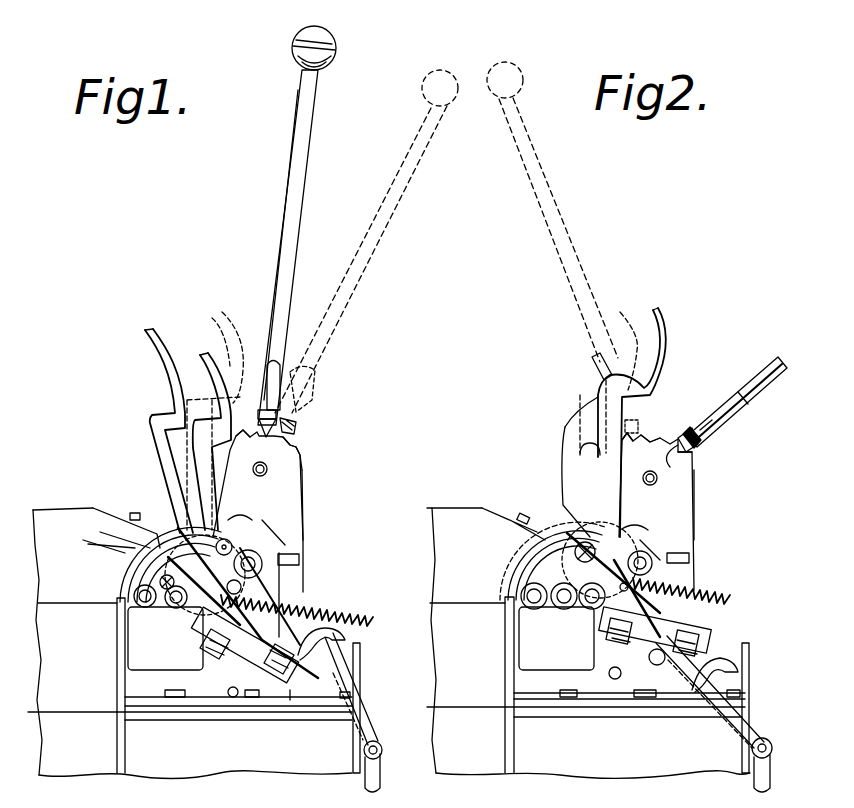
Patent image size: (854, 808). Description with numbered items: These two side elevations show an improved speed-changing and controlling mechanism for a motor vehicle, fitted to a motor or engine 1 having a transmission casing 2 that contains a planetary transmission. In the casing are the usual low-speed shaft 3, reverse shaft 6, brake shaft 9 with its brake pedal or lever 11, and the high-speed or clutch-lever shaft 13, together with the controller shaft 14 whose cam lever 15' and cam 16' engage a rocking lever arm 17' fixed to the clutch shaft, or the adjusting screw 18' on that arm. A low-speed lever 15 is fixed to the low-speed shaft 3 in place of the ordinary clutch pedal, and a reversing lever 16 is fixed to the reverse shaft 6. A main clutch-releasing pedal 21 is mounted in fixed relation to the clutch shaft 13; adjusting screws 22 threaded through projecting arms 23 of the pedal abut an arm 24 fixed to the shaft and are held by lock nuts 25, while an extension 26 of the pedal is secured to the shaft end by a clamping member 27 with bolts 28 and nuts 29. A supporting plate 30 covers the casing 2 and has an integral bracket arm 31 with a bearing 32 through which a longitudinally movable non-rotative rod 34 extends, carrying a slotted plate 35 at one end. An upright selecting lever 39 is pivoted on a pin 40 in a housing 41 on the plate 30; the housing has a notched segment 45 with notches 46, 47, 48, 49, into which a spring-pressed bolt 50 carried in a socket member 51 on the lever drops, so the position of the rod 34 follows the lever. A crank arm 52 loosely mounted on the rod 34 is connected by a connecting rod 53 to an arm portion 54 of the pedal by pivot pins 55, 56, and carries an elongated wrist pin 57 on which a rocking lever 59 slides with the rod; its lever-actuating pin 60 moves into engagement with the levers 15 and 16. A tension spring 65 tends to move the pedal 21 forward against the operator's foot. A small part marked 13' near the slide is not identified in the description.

In FIG. 1, the motor or engine 1 is at (66, 520).
In FIG. 2, the motor or engine 1 is at (455, 512).
In FIG. 1, the transmission casing 2 is at (108, 512).
In FIG. 2, the transmission casing 2 is at (512, 520).
In FIG. 1, the low-speed shaft 3 is at (173, 610).
In FIG. 2, the low-speed shaft 3 is at (563, 610).
In FIG. 1, the reverse shaft 6 is at (147, 610).
In FIG. 2, the reverse shaft 6 is at (534, 610).
In FIG. 1, the brake shaft 9 is at (197, 605).
In FIG. 2, the brake shaft 9 is at (590, 610).
In FIG. 1, the brake pedal or lever 11 is at (194, 452).
In FIG. 2, the brake pedal or lever 11 is at (572, 428).
In FIG. 1, the high-speed shaft or clutch-lever shaft 13 is at (243, 612).
In FIG. 2, the high-speed shaft or clutch-lever shaft 13 is at (639, 641).
In FIG. 1, the stop block 13' is at (306, 552).
In FIG. 1, the controller shaft 14 is at (383, 770).
In FIG. 2, the controller shaft 14 is at (752, 700).
In FIG. 1, the low-speed lever 15 is at (98, 542).
In FIG. 2, the low-speed lever 15 is at (630, 621).
In FIG. 1, the cam lever 15' is at (371, 674).
In FIG. 1, the reversing lever 16 is at (115, 532).
In FIG. 2, the reversing lever 16 is at (510, 589).
In FIG. 1, the cam 16' is at (345, 642).
In FIG. 2, the cam 16' is at (750, 633).
In FIG. 1, the rocking lever arm 17' is at (356, 597).
In FIG. 2, the rocking lever arm 17' is at (747, 596).
In FIG. 1, the adjusting screw 18' is at (349, 614).
In FIG. 2, the adjusting screw 18' is at (742, 614).
In FIG. 1, the main clutch-releasing pedal or lever 21 is at (130, 420).
In FIG. 2, the main clutch-releasing pedal or lever 21 is at (668, 330).
In FIG. 1, the adjusting screws 22 is at (216, 700).
In FIG. 2, the adjusting screws 22 is at (610, 640).
In FIG. 1, the projecting arm 23 is at (318, 590).
In FIG. 2, the projecting arm 23 is at (692, 580).
In FIG. 1, the arm 24 is at (270, 690).
In FIG. 2, the arm 24 is at (630, 690).
In FIG. 1, the lock nut 25 is at (230, 697).
In FIG. 2, the lock nut 25 is at (590, 625).
In FIG. 2, the extension or arm portion 26 is at (610, 675).
In FIG. 1, the clamping member 27 is at (345, 673).
In FIG. 2, the clamping member 27 is at (705, 678).
In FIG. 1, the clamping screws or headed bolts 28 is at (340, 651).
In FIG. 2, the clamping screws or headed bolts 28 is at (705, 668).
In FIG. 1, the threaded nuts 29 is at (306, 552).
In FIG. 1, the supporting plate or bracket member 30 is at (150, 520).
In FIG. 2, the supporting plate or bracket member 30 is at (520, 545).
In FIG. 1, the bracket arm or extension 31 is at (276, 518).
In FIG. 2, the bracket arm or extension 31 is at (700, 560).
In FIG. 2, the bearing 32 is at (670, 577).
In FIG. 1, the longitudinally movable non-rotative shaft or rod 34 is at (276, 500).
In FIG. 2, the longitudinally movable non-rotative shaft or rod 34 is at (690, 556).
In FIG. 1, the grooved or slotted plate 35 is at (300, 576).
In FIG. 2, the grooved or slotted plate 35 is at (694, 565).
In FIG. 1, the selecting lever 39 is at (370, 215).
In FIG. 2, the selecting lever 39 is at (770, 364).
In FIG. 1, the pivot pin or axle 40 is at (268, 470).
In FIG. 2, the pivot pin or axle 40 is at (658, 478).
In FIG. 1, the housing 41 is at (304, 476).
In FIG. 2, the housing 41 is at (696, 494).
In FIG. 1, the notched segment 45 is at (292, 448).
In FIG. 2, the notched segment 45 is at (692, 462).
In FIG. 1, the notch 46 is at (290, 423).
In FIG. 2, the notch 46 is at (660, 438).
In FIG. 1, the notch 47 is at (290, 434).
In FIG. 2, the notch 47 is at (686, 430).
In FIG. 1, the notch 48 is at (300, 448).
In FIG. 2, the notch 48 is at (696, 451).
In FIG. 1, the notch 49 is at (254, 447).
In FIG. 2, the notch 49 is at (646, 436).
In FIG. 1, the spring-pressed bolt 50 is at (284, 372).
In FIG. 2, the spring-pressed bolt 50 is at (718, 418).
In FIG. 1, the socket member 51 is at (268, 348).
In FIG. 2, the socket member 51 is at (742, 398).
In FIG. 1, the crank or lever arm 52 is at (268, 518).
In FIG. 2, the crank or lever arm 52 is at (662, 548).
In FIG. 1, the connecting rod or pitman 53 is at (236, 514).
In FIG. 2, the connecting rod or pitman 53 is at (637, 510).
In FIG. 1, the projecting arm portion 54 is at (160, 560).
In FIG. 2, the projecting arm portion 54 is at (577, 525).
In FIG. 1, the pivot pin or bolt 55 is at (135, 590).
In FIG. 2, the pivot pin or bolt 55 is at (578, 540).
In FIG. 1, the pivot pin or bolt 56 is at (190, 600).
In FIG. 2, the pivot pin or bolt 56 is at (650, 540).
In FIG. 1, the wrist pin or crank pin 57 is at (305, 540).
In FIG. 1, the rocking crank arm or lever 59 is at (248, 548).
In FIG. 2, the rocking crank arm or lever 59 is at (650, 552).
In FIG. 1, the lever-actuating pin 60 is at (229, 544).
In FIG. 2, the lever-actuating pin 60 is at (639, 549).
In FIG. 1, the tension spring 65 is at (372, 620).
In FIG. 2, the tension spring 65 is at (732, 598).